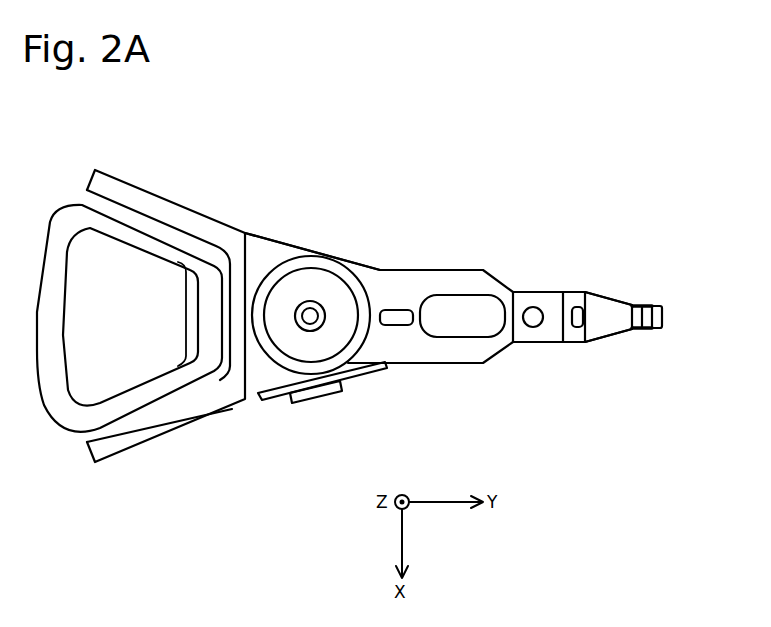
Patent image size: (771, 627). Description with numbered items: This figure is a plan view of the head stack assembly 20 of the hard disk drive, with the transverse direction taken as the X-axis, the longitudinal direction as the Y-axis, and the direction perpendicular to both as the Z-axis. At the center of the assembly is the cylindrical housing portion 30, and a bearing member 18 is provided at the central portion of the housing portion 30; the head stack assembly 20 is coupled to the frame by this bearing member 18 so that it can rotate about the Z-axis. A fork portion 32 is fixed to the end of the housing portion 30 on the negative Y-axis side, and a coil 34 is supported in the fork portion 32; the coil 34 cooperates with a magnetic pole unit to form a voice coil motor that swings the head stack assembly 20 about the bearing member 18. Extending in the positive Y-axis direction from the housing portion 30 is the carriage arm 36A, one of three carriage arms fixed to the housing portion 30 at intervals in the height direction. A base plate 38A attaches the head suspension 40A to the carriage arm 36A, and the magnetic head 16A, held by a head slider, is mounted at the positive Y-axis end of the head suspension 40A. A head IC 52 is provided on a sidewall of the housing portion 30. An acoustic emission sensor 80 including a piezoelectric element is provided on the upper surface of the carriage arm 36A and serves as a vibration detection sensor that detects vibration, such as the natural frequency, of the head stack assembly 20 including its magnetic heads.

The head stack assembly 20 is at (584, 198).
The coil 34 is at (73, 203).
The fork portion 32 is at (192, 210).
The housing portion 30 is at (268, 260).
The bearing member 18 is at (304, 328).
The acoustic emission (AE) sensor 80 is at (395, 308).
The head IC 52 is at (312, 403).
The carriage arm 36A is at (343, 258).
The base plate 38A is at (536, 292).
The head suspension 40A is at (609, 335).
The magnetic head 16A is at (648, 306).